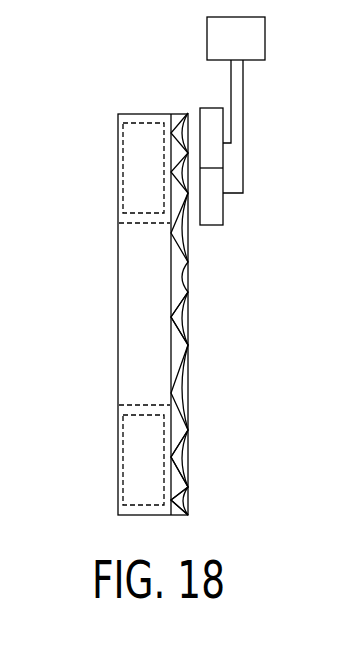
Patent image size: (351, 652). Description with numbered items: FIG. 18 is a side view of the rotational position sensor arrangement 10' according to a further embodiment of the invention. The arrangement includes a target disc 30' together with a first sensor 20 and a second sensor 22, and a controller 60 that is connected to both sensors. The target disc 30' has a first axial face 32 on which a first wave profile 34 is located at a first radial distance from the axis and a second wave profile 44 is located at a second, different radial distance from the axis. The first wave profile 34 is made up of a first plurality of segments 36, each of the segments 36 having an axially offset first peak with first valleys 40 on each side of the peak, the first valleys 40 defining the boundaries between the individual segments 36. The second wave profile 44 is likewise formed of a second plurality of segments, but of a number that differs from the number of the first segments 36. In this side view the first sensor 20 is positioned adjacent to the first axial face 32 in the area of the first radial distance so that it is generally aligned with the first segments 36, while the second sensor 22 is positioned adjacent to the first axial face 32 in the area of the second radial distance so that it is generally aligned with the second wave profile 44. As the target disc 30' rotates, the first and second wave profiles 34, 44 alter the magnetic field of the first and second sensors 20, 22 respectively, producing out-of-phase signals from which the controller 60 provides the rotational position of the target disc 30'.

The rotational position sensor arrangement 10' is at (115, 261).
The target disc 30' is at (114, 314).
The first sensor 20 is at (200, 110).
The second sensor 22 is at (215, 205).
The controller 60 is at (218, 42).
The second wave profile 44 is at (202, 317).
The first plurality of segments 36 is at (173, 360).
The first axial face 32 is at (202, 431).
The first valleys 40 is at (173, 457).
The first wave profile 34 is at (200, 499).